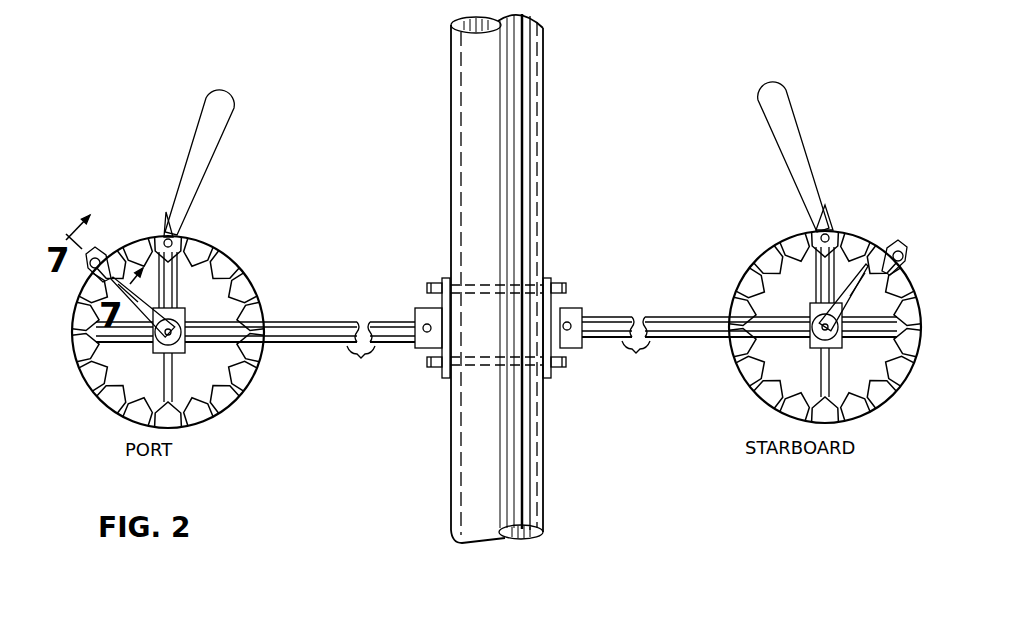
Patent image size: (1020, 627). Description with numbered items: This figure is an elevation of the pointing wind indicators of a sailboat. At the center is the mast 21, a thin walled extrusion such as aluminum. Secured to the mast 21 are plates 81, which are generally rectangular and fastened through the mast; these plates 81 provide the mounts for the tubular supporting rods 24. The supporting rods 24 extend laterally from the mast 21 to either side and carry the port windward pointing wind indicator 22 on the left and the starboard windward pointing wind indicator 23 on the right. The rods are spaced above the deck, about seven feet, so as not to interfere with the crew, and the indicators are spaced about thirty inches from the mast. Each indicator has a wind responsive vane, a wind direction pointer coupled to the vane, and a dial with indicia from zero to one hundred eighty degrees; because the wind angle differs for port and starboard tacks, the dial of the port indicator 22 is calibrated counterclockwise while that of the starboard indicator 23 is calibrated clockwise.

The mast 21 is at (543, 162).
The port windward pointing wind indicator 22 is at (183, 259).
The starboard windward pointing wind indicator 23 is at (837, 241).
The supporting rod 24 is at (310, 321).
The plate 81 is at (443, 280).